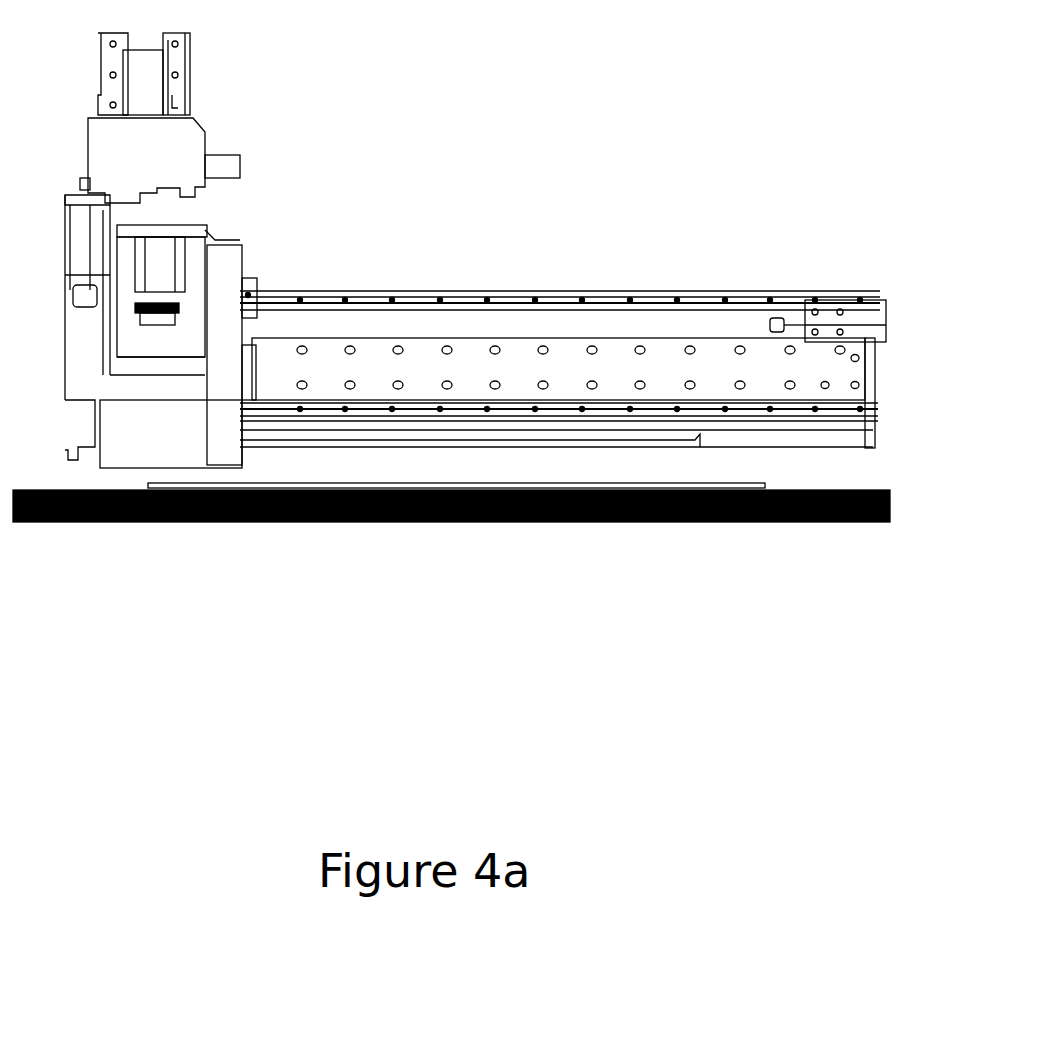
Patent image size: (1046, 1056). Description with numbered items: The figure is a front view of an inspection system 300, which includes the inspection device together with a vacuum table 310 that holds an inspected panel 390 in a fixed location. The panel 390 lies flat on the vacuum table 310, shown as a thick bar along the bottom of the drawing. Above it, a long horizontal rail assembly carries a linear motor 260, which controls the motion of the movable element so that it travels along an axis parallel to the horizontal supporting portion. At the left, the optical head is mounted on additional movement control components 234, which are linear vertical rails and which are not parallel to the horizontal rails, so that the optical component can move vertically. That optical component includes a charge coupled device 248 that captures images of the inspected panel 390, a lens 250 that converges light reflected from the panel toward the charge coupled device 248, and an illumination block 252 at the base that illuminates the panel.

The additional movement control component 234 is at (121, 80).
The charge coupled device 248 is at (193, 147).
The lens 250 is at (160, 268).
The illumination block 252 is at (153, 434).
The linear motor 260 is at (737, 343).
The inspected panel 390 is at (678, 483).
The vacuum table 310 is at (402, 524).
The inspection system 300 is at (243, 637).